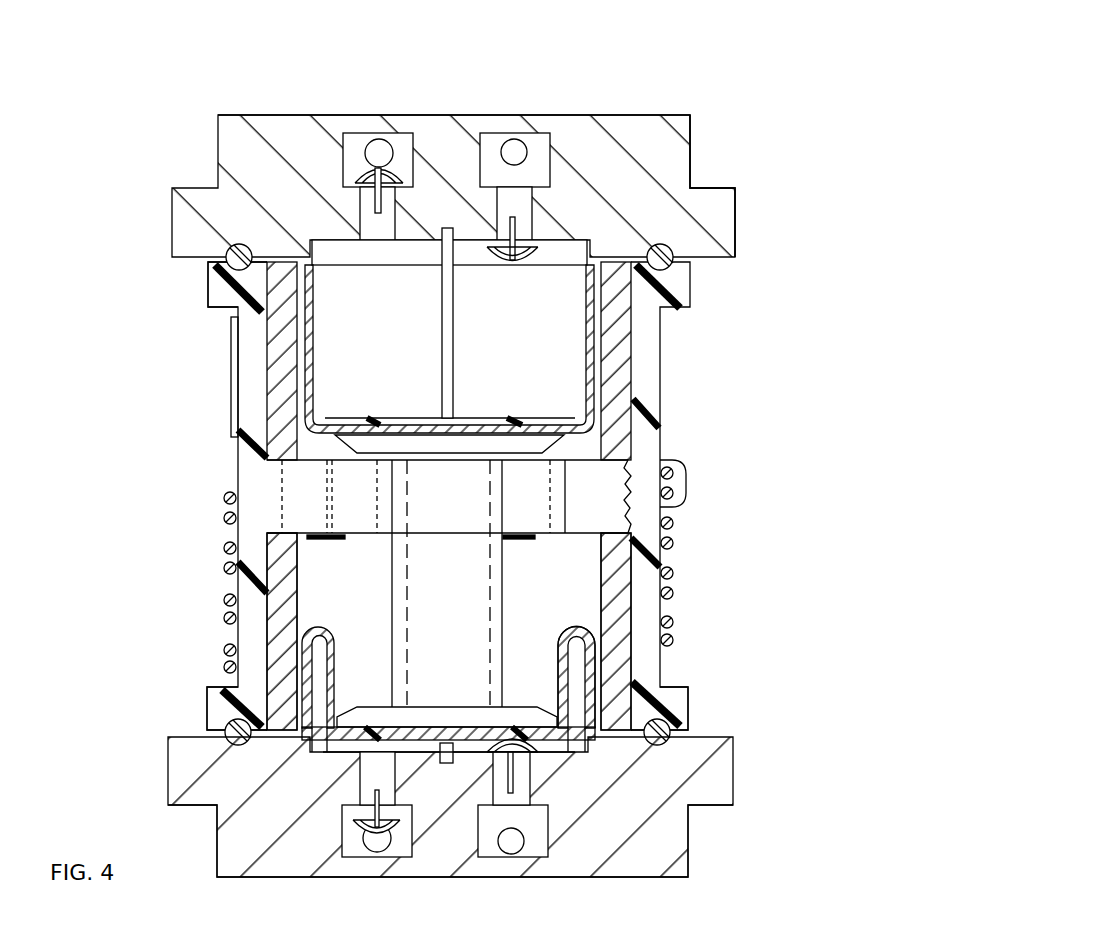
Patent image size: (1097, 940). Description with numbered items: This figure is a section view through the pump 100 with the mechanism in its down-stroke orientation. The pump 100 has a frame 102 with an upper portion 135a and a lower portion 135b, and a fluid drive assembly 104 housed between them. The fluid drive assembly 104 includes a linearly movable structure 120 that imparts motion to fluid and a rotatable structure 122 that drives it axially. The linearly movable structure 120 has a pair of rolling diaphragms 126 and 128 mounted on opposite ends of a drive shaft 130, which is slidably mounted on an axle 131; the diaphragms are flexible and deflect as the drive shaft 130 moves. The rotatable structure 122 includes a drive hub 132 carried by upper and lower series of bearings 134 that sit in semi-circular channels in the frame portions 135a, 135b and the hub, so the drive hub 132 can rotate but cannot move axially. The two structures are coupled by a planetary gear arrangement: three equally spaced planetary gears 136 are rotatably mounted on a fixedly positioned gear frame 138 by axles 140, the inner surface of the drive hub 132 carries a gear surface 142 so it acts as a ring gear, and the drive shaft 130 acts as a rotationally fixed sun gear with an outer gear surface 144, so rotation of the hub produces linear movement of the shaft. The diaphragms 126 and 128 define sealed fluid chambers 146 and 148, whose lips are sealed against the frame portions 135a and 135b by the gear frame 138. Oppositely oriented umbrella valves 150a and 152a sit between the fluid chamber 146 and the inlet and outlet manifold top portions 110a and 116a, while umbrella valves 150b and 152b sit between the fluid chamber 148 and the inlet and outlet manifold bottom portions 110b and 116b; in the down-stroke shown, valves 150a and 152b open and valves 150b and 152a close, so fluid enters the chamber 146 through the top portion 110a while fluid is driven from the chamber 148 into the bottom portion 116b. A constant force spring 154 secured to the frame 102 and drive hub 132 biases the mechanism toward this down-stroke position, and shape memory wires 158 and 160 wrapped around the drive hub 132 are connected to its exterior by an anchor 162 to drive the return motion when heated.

The pump 100 is at (621, 40).
The frame 102 is at (670, 104).
The fluid drive assembly 104 is at (126, 404).
The inlet manifold top portion 110a is at (515, 137).
The inlet manifold bottom portion 110b is at (512, 856).
The outlet manifold top portion 116a is at (378, 136).
The outlet manifold bottom portion 116b is at (375, 858).
The linearly movable structure 120 is at (503, 630).
The rotatable structure 122 is at (198, 292).
The rolling diaphragm 126 is at (595, 672).
The rolling diaphragm 128 is at (600, 361).
The drive shaft 130 is at (572, 578).
The axle 131 is at (455, 400).
The drive hub 132 is at (207, 705).
The bearings 134 is at (670, 748).
The frame upper portion 135a is at (690, 132).
The frame lower portion 135b is at (690, 857).
The planetary gears 136 is at (388, 498).
The gear frame 138 is at (262, 640).
The axles 140 is at (333, 498).
The gear surface 142 is at (630, 497).
The outer gear surface 144 is at (390, 648).
The fluid chamber 146 is at (401, 345).
The fluid chamber 148 is at (576, 748).
The umbrella valve 150a is at (498, 266).
The umbrella valve 150b is at (572, 758).
The umbrella valve 152a is at (397, 170).
The umbrella valve 152b is at (398, 838).
The constant force spring 154 is at (231, 397).
The wire 158 is at (226, 495).
The wire 160 is at (224, 518).
The anchor 162 is at (684, 463).